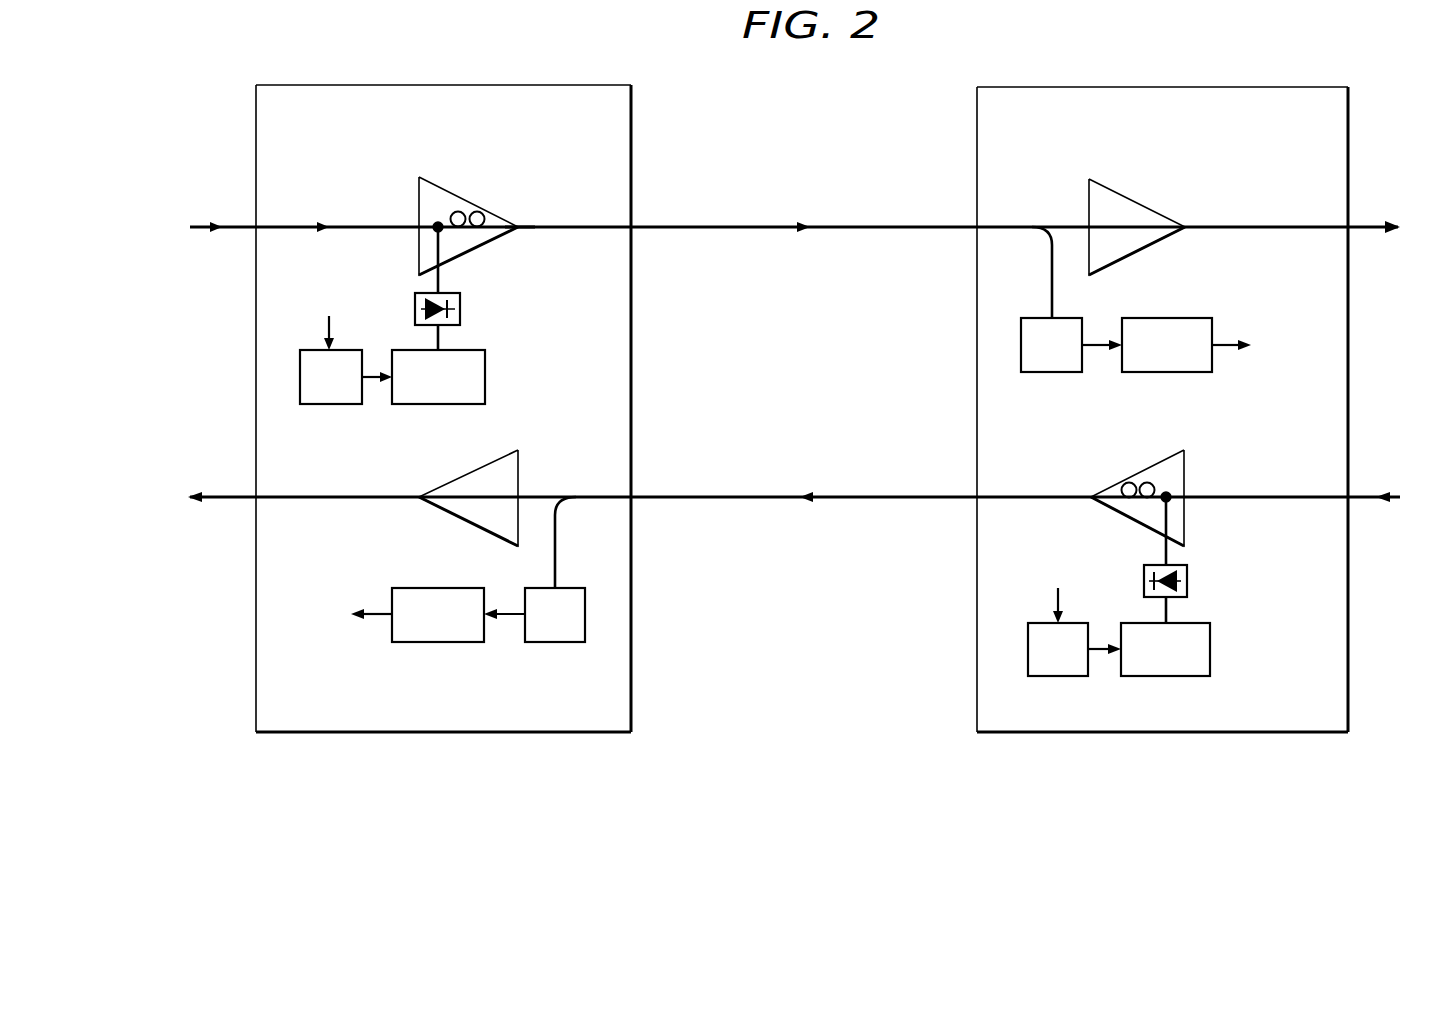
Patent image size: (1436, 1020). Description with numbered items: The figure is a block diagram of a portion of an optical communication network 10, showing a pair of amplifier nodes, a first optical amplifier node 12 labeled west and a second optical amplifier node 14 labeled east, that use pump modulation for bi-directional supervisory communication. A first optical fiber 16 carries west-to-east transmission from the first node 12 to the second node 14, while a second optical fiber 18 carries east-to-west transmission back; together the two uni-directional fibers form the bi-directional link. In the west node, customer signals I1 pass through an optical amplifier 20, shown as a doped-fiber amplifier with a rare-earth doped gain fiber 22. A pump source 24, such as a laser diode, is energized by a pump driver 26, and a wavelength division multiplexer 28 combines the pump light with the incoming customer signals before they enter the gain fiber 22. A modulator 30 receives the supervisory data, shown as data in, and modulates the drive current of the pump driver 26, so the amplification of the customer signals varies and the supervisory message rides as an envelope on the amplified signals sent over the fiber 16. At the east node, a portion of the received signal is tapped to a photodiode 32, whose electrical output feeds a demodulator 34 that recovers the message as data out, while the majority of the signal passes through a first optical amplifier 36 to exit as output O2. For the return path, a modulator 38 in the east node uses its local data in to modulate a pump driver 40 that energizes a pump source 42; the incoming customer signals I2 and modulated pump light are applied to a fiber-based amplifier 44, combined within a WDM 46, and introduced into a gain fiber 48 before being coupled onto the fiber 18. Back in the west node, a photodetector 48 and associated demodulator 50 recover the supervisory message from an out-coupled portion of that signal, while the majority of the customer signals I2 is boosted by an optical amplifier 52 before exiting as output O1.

The optical communication network 10 is at (208, 86).
The first optical amplifier node 12 is at (334, 87).
The second optical amplifier node 14 is at (1052, 87).
The first optical fiber 16 is at (742, 229).
The second optical fiber 18 is at (742, 499).
The optical amplifier 20 is at (447, 189).
The rare-earth doped gain fiber 22 is at (495, 216).
The pump source 24 is at (462, 310).
The pump driver 26 is at (486, 378).
The wavelength division multiplexer 28 is at (435, 224).
The modulator 30 is at (318, 404).
The photodiode 32 is at (1063, 372).
The demodulator 34 is at (1170, 372).
The first optical amplifier 36 is at (1118, 187).
The modulator 38 is at (1060, 676).
The pump driver 40 is at (1211, 650).
The pump source 42 is at (1188, 582).
The fiber-based amplifier 44 is at (1160, 464).
The WDM 46 is at (1170, 494).
The gain fiber / photodetector 48 is at (556, 642).
The demodulator 50 is at (432, 642).
The optical amplifier 52 is at (520, 462).